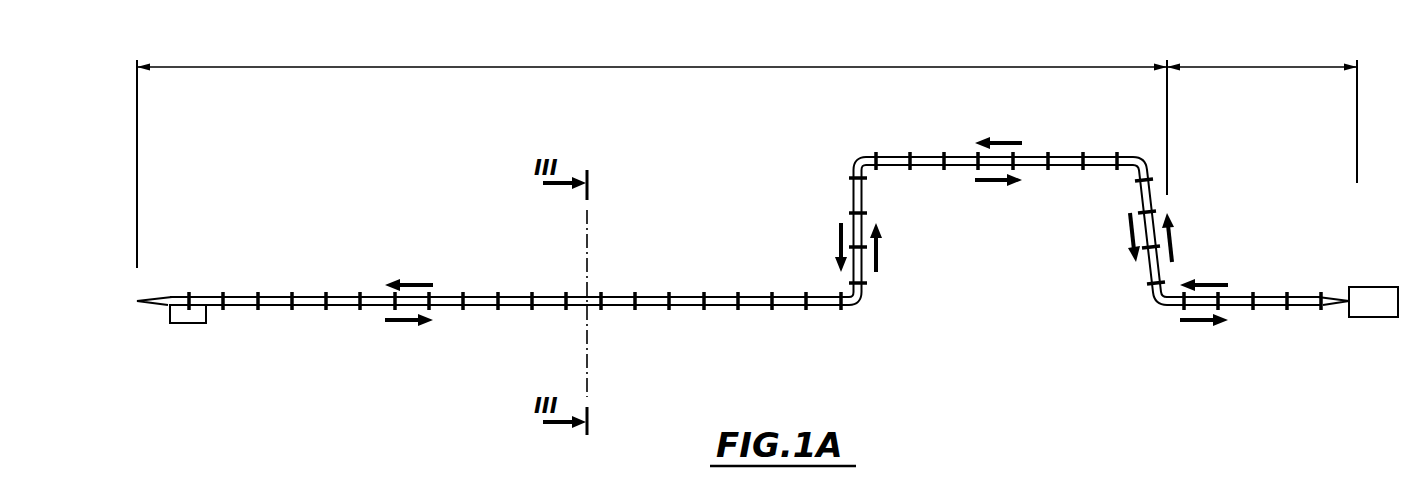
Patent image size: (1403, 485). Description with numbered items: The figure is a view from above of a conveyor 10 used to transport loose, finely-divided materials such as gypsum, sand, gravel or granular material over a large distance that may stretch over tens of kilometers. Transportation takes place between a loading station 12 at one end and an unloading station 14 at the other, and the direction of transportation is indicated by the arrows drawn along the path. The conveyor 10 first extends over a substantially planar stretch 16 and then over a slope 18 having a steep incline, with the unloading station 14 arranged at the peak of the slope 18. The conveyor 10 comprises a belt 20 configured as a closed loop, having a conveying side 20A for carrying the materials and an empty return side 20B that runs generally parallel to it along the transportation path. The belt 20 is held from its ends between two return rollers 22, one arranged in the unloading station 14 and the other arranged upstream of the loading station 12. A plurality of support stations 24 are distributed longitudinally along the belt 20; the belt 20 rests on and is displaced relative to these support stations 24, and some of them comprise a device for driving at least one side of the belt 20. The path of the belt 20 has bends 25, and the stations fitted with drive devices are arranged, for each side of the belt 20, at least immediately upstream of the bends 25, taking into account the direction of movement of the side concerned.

The conveyor 10 is at (709, 205).
The loading station 12 is at (181, 335).
The unloading station 14 is at (1369, 272).
The substantially planar stretch 16 is at (652, 155).
The slope 18 is at (1262, 118).
The belt 20 is at (665, 296).
The conveying side 20A is at (300, 306).
The empty return side 20B is at (271, 296).
The return roller 22 is at (137, 297).
The support station 24 is at (223, 292).
The bend 25 is at (846, 146).